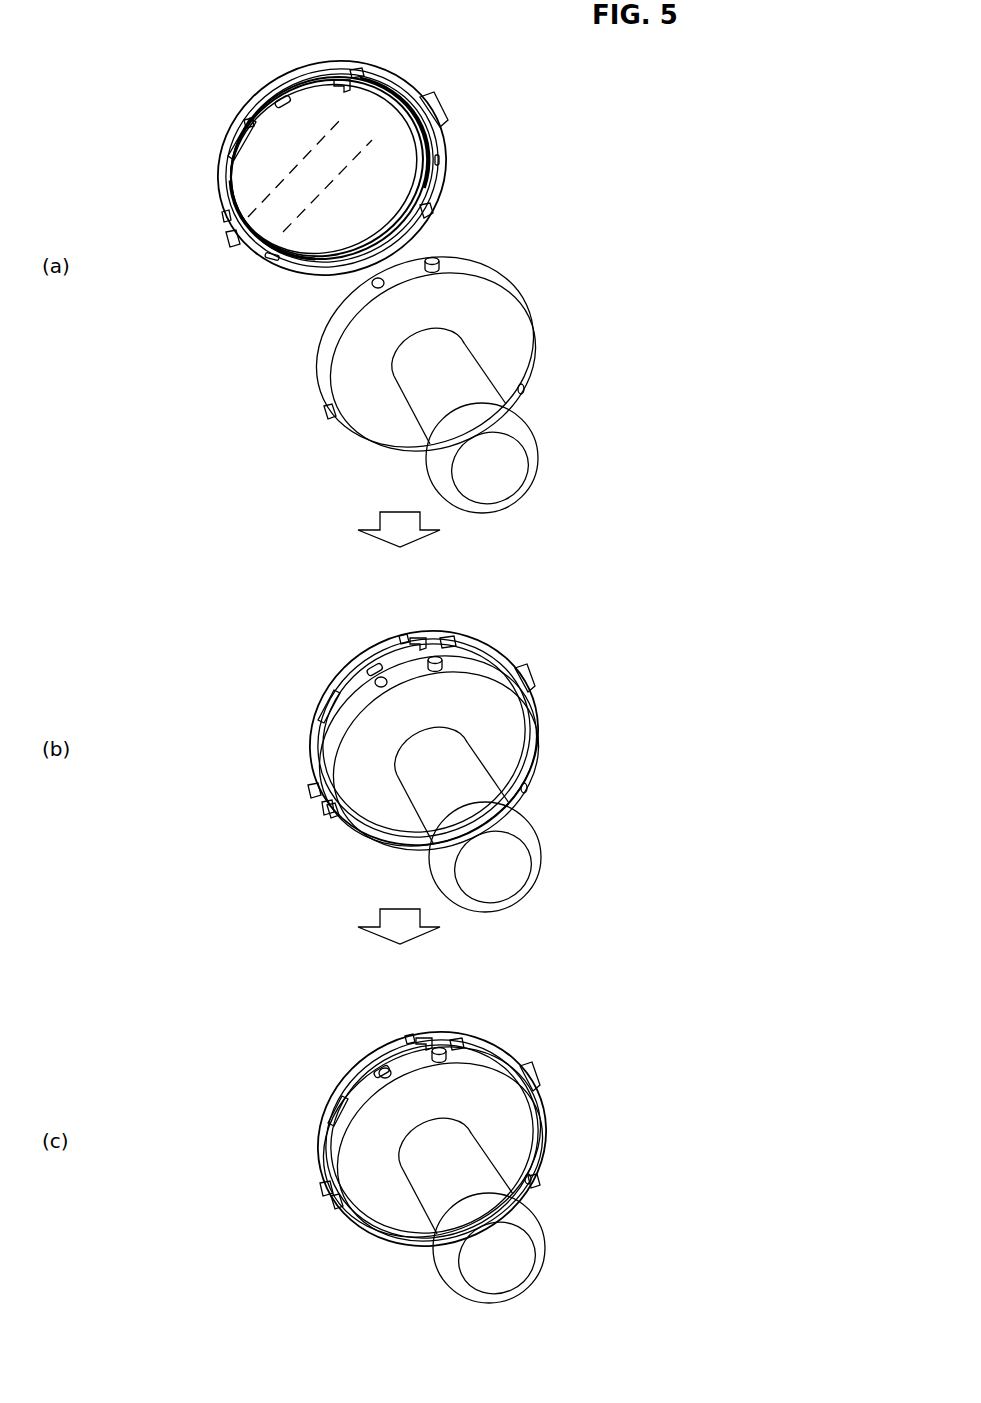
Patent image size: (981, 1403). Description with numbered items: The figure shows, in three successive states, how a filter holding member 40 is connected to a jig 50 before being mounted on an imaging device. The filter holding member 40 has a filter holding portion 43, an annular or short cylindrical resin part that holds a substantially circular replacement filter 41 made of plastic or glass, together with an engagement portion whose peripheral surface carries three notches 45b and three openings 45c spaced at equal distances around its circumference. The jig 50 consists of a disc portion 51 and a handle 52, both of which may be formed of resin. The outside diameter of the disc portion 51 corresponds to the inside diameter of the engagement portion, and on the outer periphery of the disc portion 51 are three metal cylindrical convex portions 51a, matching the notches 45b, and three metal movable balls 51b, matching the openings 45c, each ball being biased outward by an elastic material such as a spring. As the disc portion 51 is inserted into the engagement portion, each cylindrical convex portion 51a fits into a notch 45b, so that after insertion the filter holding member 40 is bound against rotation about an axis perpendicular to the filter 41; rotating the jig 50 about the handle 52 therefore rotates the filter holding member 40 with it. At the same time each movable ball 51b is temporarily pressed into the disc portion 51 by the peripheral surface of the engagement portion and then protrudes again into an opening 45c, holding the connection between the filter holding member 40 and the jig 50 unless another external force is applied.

The filter holding member 40 is at (466, 112).
The filter 41 is at (387, 113).
The filter holding portion 43 is at (272, 92).
The notch 45b is at (343, 88).
The opening 45c is at (270, 108).
The jig 50 is at (537, 291).
The disc portion 51 is at (521, 338).
The cylindrical convex portion 51a is at (438, 263).
The movable ball 51b is at (366, 289).
The handle 52 is at (512, 438).